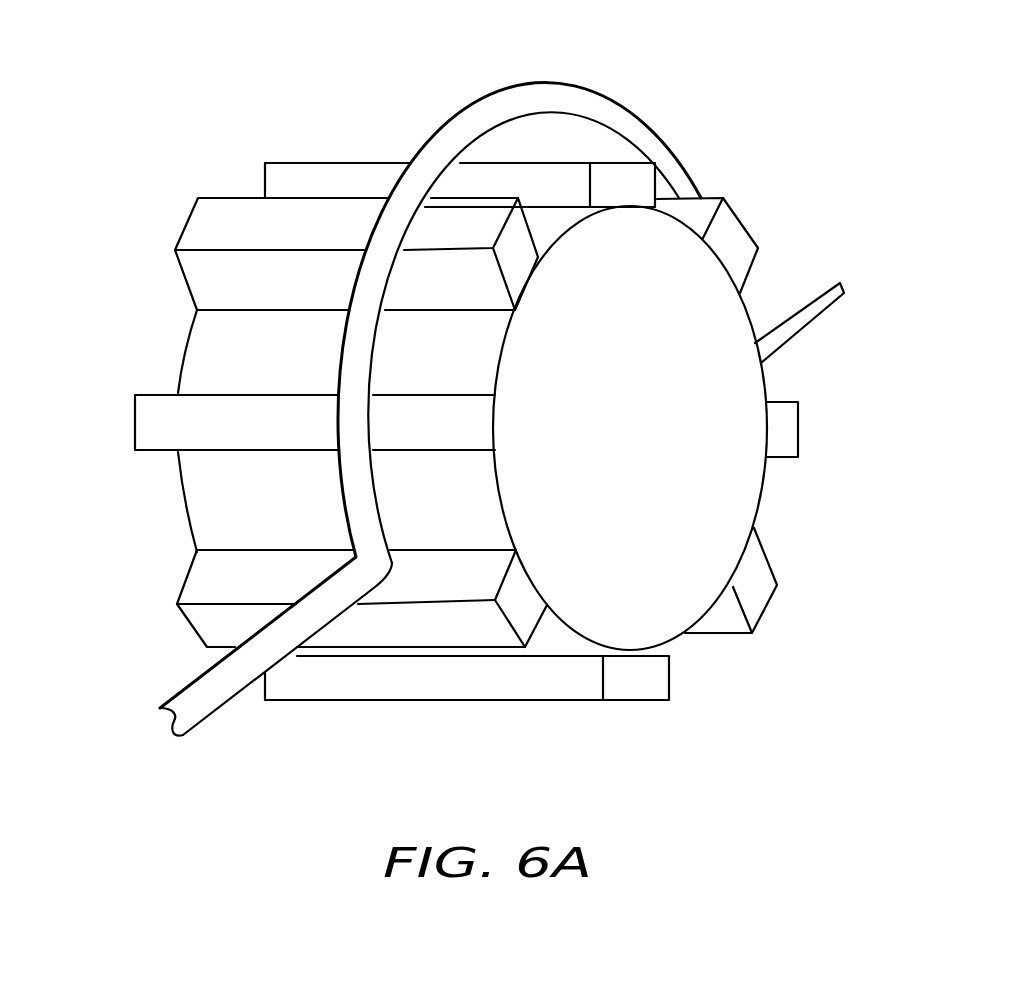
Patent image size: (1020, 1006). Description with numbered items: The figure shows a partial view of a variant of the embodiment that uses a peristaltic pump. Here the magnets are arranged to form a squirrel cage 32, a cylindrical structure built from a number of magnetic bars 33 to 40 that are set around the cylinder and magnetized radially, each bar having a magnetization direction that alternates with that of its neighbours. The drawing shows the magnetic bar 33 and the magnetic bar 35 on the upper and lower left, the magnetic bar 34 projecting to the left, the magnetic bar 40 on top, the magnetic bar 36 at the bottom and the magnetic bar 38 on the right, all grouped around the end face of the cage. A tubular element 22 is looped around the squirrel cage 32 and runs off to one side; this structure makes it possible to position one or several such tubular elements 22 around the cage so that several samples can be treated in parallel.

The tubular element 22 is at (542, 82).
The squirrel cage 32 is at (363, 137).
The magnetic bar 33 is at (185, 224).
The magnetic bar 34 is at (135, 425).
The magnetic bar 35 is at (188, 628).
The magnetic bar 36 is at (669, 700).
The magnetic bar 38 is at (798, 432).
The magnetic bar 40 is at (265, 163).